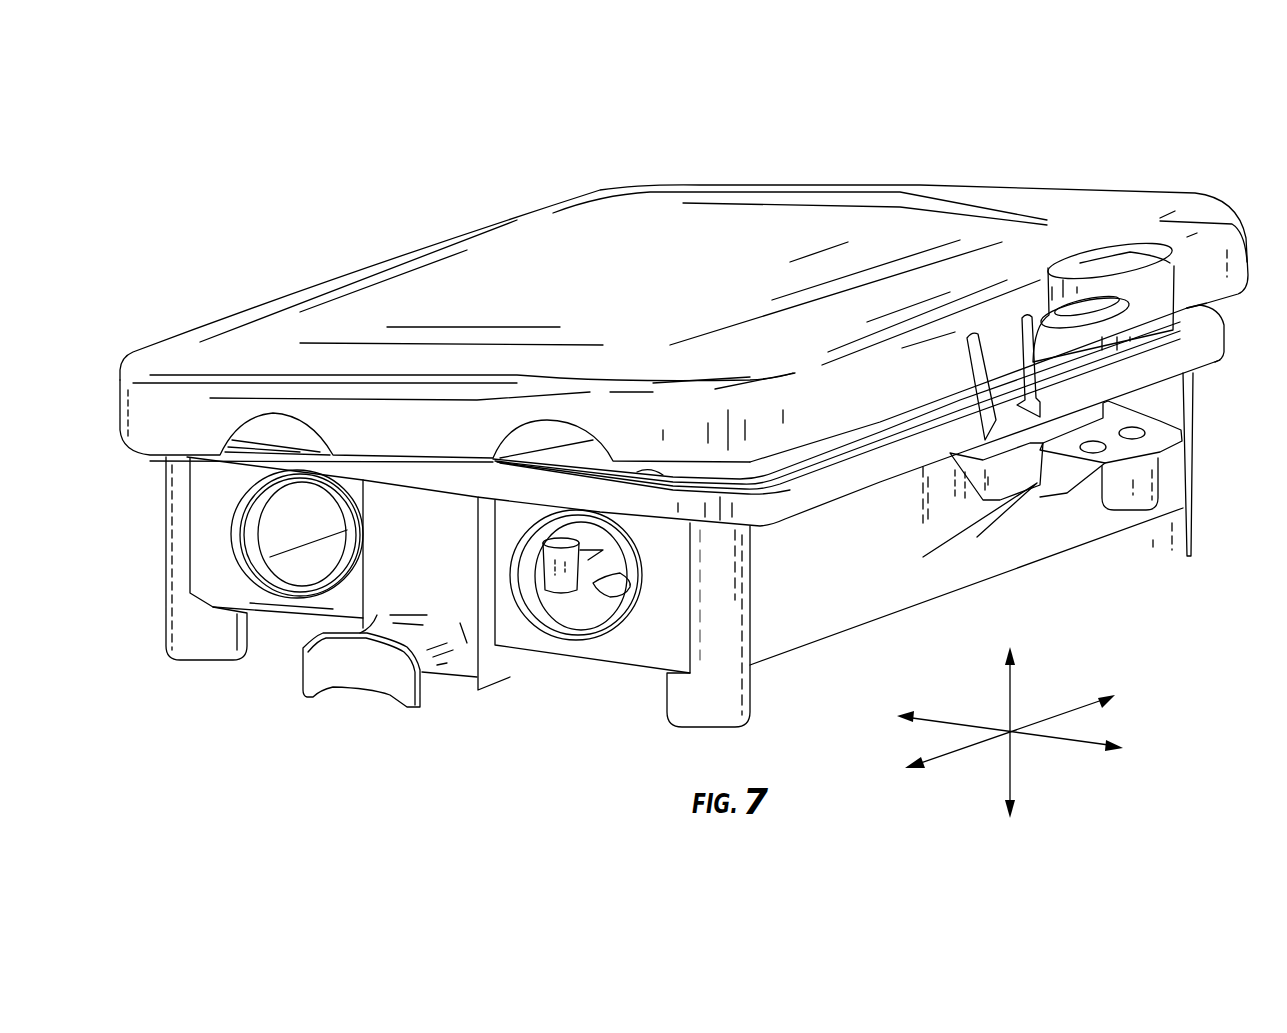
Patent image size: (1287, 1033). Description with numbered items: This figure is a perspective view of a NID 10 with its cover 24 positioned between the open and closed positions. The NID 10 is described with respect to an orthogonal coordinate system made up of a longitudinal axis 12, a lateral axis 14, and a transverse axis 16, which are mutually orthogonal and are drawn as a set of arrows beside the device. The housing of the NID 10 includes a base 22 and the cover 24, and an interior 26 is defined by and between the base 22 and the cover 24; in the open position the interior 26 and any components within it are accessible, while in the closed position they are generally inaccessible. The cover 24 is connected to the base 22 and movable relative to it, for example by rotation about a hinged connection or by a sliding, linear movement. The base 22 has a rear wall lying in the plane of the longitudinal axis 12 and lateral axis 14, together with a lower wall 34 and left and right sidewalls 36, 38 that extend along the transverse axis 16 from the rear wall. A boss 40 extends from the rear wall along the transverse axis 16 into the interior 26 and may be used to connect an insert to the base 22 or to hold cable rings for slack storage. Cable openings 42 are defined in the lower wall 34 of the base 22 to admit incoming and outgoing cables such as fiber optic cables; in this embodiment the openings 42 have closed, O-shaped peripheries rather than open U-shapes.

The NID 10 is at (701, 125).
The longitudinal axis 12 is at (1058, 713).
The lateral axis 14 is at (1053, 738).
The transverse axis 16 is at (1008, 702).
The base 22 is at (860, 585).
The cover 24 is at (1093, 204).
The interior 26 is at (328, 528).
The lower wall 34 is at (637, 640).
The left sidewall 36 is at (278, 516).
The right sidewall 38 is at (1028, 537).
The boss 40 is at (557, 568).
The cable opening 42 is at (290, 580).